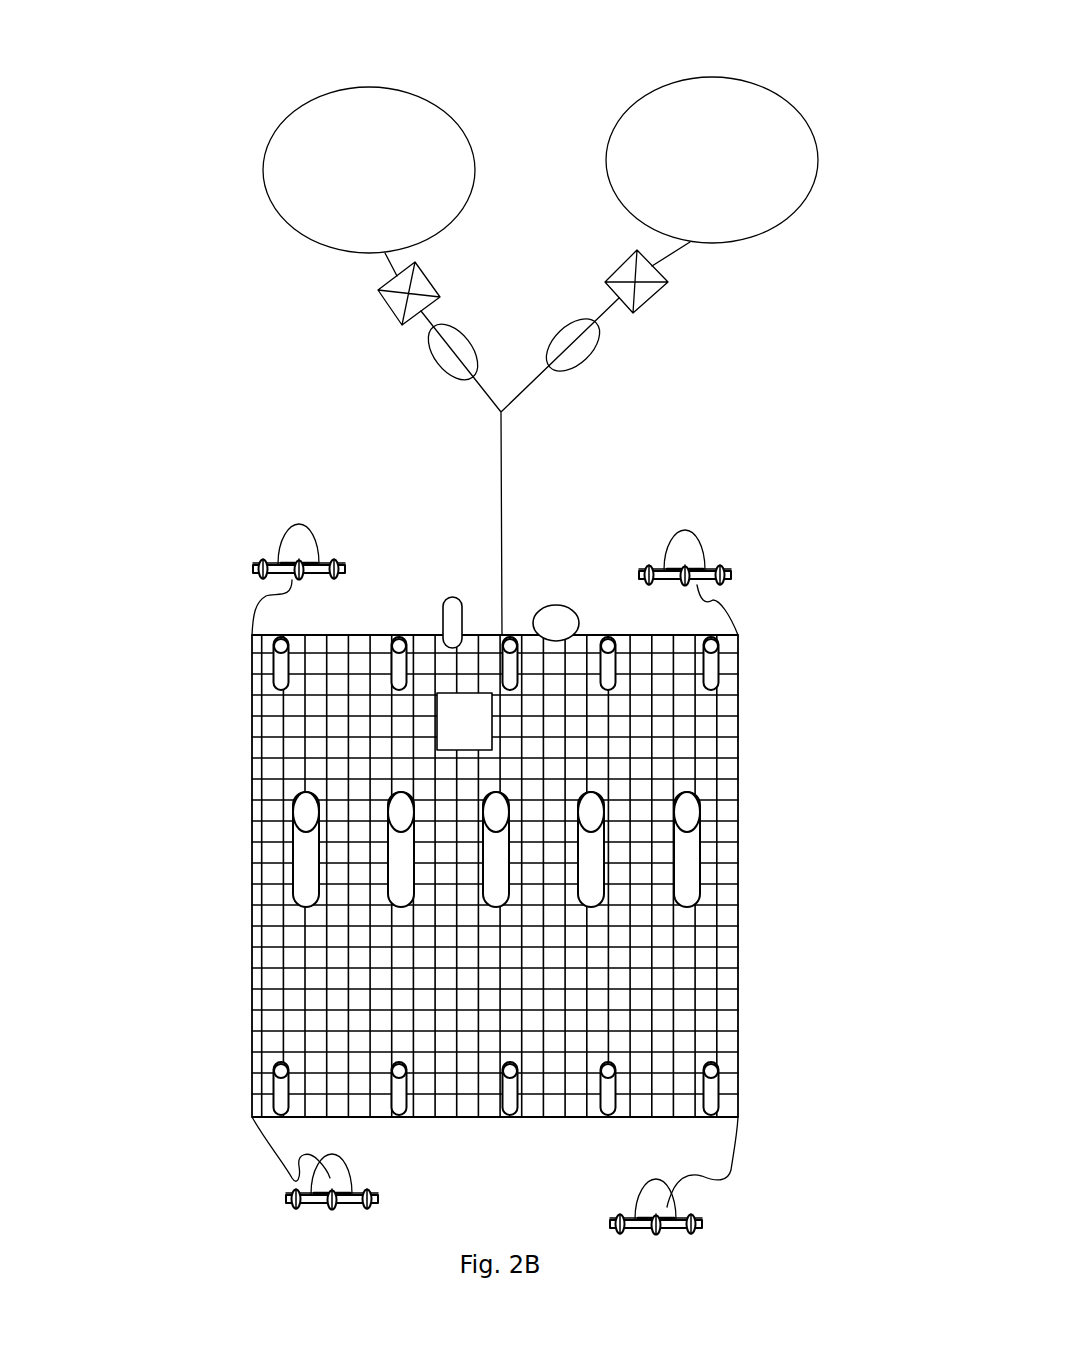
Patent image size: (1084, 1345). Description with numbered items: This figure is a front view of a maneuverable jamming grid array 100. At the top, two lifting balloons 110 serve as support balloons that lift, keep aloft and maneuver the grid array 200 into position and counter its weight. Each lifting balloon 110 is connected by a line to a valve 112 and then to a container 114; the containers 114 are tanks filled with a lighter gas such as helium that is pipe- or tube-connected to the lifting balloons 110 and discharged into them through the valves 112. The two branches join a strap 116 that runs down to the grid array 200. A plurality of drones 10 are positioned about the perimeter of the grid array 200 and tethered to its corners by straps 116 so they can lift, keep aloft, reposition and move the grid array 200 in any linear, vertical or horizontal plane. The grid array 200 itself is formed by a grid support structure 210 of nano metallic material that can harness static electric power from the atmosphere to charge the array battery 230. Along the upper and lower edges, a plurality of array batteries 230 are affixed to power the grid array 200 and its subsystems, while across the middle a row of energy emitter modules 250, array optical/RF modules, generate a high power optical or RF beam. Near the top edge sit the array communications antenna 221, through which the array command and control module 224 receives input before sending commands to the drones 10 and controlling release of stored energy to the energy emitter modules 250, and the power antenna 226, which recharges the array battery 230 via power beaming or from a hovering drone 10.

The maneuverable jamming grid array 100 is at (178, 106).
The lifting balloons 110 is at (296, 102).
The valves 112 is at (386, 302).
The containers 114 is at (457, 347).
The straps 116 is at (504, 490).
The drone 10 is at (286, 532).
The grid array 200 is at (491, 802).
The grid support structure 210 is at (717, 705).
The array communications antenna 221 is at (452, 602).
The array command and control module 224 is at (452, 715).
The power antenna 226 is at (545, 618).
The array battery 230 is at (230, 675).
The energy emitter modules 250 is at (236, 851).